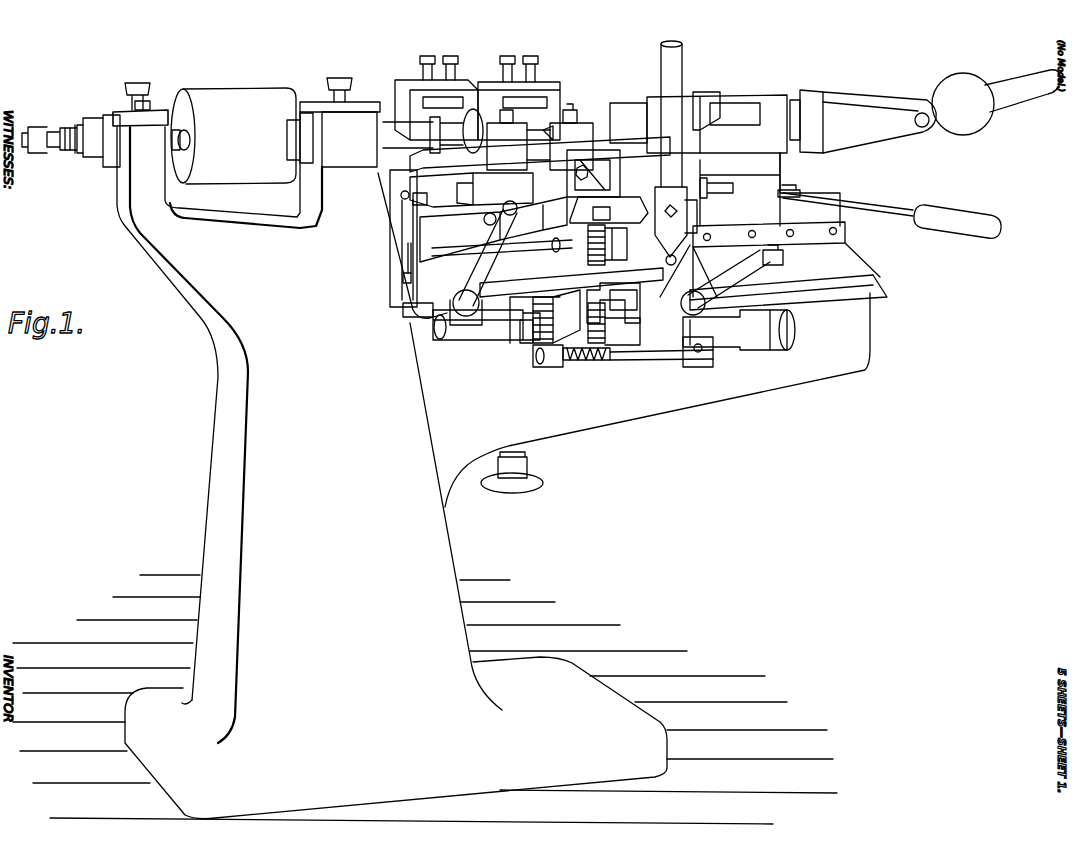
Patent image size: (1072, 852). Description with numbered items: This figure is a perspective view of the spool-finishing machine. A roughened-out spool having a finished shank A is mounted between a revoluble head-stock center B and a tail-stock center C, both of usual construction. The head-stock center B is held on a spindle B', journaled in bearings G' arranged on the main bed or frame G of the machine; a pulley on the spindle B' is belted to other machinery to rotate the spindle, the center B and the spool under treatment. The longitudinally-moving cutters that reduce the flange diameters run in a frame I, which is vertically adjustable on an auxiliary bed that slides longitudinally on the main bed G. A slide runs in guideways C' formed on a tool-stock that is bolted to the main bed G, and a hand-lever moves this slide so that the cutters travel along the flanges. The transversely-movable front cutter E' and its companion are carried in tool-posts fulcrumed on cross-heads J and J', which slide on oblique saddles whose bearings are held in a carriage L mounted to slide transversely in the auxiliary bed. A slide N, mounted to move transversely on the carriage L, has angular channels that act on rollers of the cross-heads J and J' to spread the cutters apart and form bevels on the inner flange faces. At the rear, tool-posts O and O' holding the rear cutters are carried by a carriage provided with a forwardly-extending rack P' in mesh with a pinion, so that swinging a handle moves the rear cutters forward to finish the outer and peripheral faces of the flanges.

The main bed or frame G is at (441, 475).
The bearings G' is at (201, 153).
The spindle B' is at (313, 140).
The tool-post O is at (430, 98).
The tool-post O' is at (523, 97).
The head-stock center B is at (433, 131).
The shank A is at (540, 125).
The tail-stock center C is at (698, 119).
The front cutter E' is at (540, 154).
The slide N is at (610, 160).
The cross-head J' is at (700, 123).
The guideways C' is at (769, 198).
The cross-head J is at (471, 190).
The frame I is at (408, 221).
The carriage L is at (496, 229).
The rack P' is at (545, 316).